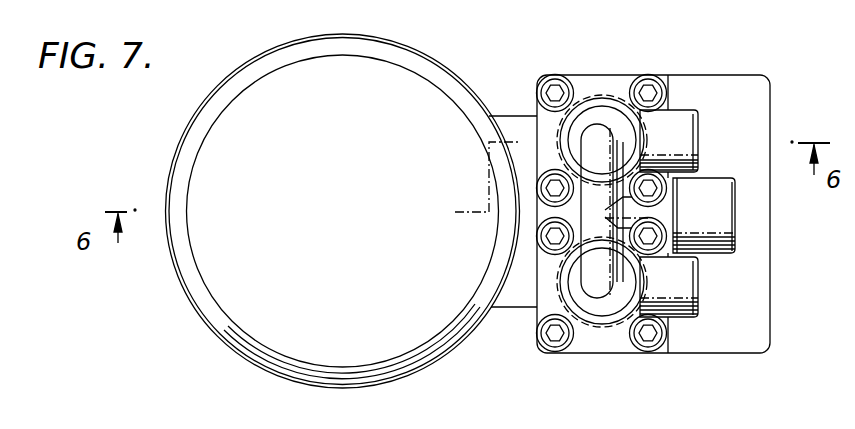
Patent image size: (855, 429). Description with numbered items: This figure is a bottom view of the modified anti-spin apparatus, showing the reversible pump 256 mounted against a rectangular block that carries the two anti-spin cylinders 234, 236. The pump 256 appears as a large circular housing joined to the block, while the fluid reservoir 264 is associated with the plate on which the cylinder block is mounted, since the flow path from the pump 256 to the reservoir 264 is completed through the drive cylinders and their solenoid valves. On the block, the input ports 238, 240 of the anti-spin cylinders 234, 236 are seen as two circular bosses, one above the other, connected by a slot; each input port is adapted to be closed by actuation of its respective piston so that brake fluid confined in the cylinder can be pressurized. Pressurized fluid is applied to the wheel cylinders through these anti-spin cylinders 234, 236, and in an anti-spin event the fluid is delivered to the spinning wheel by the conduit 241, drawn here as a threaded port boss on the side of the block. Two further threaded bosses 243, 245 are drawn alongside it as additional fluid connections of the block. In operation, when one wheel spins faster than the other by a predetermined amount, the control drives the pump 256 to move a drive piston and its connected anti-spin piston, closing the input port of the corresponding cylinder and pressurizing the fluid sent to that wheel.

The anti-spin cylinder 234 is at (607, 58).
The anti-spin cylinder 236 is at (597, 366).
The input port 238 is at (622, 135).
The input port 240 is at (620, 290).
The conduit 241 is at (688, 143).
The second port 243 is at (690, 300).
The third port 245 is at (714, 180).
The reversible pump 256 is at (358, 226).
The fluid reservoir 264 is at (770, 274).